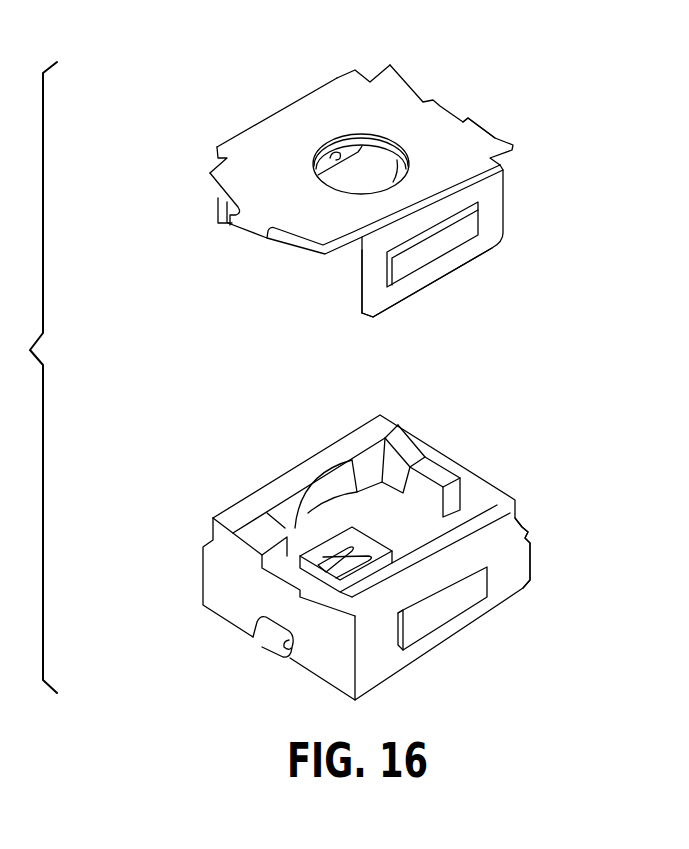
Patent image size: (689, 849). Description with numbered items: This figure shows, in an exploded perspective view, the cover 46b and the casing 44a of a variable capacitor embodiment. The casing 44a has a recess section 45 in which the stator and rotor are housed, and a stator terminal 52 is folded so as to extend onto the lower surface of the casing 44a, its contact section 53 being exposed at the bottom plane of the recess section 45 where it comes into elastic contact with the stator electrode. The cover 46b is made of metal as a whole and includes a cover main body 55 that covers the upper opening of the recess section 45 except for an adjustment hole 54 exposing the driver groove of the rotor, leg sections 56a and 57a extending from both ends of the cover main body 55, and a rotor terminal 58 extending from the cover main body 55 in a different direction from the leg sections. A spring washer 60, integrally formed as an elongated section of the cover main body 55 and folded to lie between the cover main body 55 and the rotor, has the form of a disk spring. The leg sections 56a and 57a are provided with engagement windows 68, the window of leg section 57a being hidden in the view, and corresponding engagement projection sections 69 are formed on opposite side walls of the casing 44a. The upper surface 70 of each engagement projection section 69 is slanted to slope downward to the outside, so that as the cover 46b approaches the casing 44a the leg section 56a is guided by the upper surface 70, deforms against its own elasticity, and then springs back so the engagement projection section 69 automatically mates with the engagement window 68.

The casing 44a is at (200, 529).
The recess section 45 is at (340, 505).
The cover 46b is at (203, 146).
The stator terminal 52 is at (268, 645).
The contact section 53 is at (295, 528).
The adjustment hole 54 is at (392, 142).
The cover main body 55 is at (382, 80).
The leg section 56a is at (443, 267).
The leg section 57a is at (355, 146).
The rotor terminal 58 is at (463, 122).
The spring washer 60 is at (316, 153).
The engagement window 68 is at (462, 233).
The engagement projection section 69 is at (443, 635).
The upper surface 70 is at (483, 568).